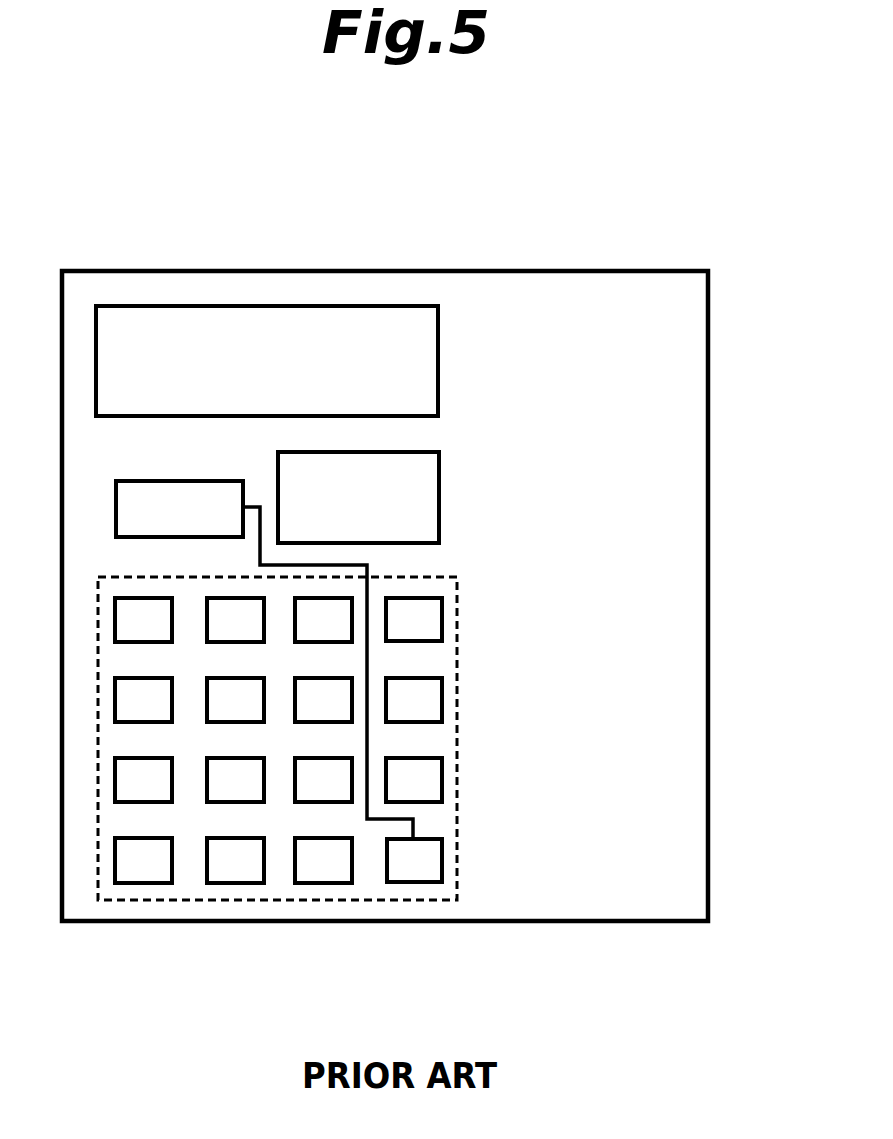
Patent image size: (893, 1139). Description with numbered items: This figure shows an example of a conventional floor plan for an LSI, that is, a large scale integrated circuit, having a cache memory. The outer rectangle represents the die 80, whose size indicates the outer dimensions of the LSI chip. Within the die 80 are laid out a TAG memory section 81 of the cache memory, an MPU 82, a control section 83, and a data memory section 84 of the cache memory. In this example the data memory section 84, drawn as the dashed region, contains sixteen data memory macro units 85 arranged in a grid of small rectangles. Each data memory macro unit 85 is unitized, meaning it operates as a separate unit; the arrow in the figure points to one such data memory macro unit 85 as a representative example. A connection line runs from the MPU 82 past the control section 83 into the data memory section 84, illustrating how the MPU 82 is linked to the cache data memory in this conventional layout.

The die 80 is at (600, 268).
The TAG memory section 81 is at (441, 352).
The MPU 82 is at (167, 478).
The control section 83 is at (441, 487).
The data memory section 84 is at (457, 627).
The data memory macro unit 85 is at (418, 859).